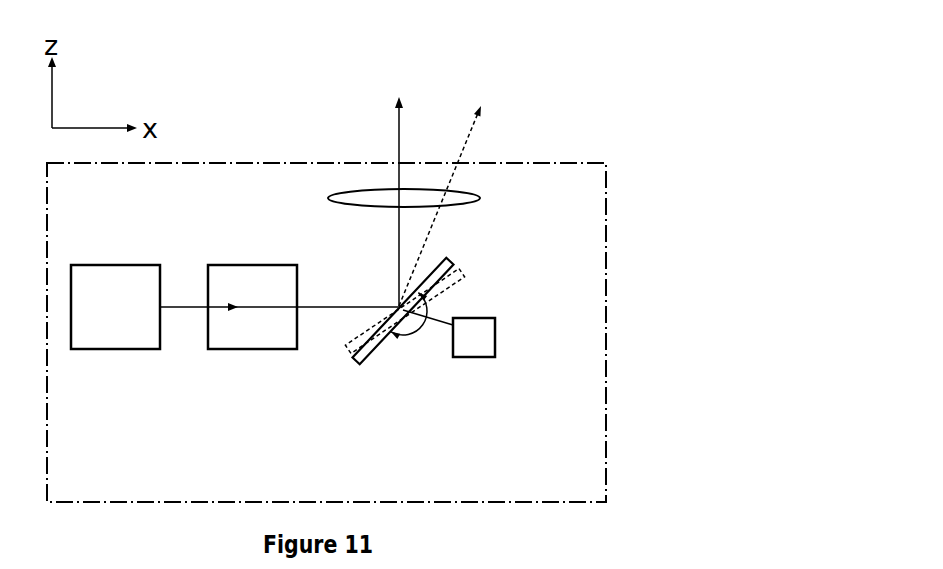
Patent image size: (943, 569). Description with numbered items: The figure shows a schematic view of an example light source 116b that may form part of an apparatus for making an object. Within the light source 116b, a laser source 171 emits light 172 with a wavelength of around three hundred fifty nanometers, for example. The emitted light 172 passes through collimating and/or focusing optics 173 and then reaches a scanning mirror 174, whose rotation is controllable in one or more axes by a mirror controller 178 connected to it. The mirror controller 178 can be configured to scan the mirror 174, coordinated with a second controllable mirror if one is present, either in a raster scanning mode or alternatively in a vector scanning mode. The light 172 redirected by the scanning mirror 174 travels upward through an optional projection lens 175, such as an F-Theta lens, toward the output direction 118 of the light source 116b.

The light source 116b is at (244, 140).
The deflected light beam direction 118 is at (481, 126).
The laser source 171 is at (120, 349).
The light 172 is at (193, 307).
The collimating and/or focusing optics 173 is at (245, 349).
The scanning mirror 174 is at (372, 352).
The projection lens 175 is at (476, 200).
The mirror controller 178 is at (485, 348).